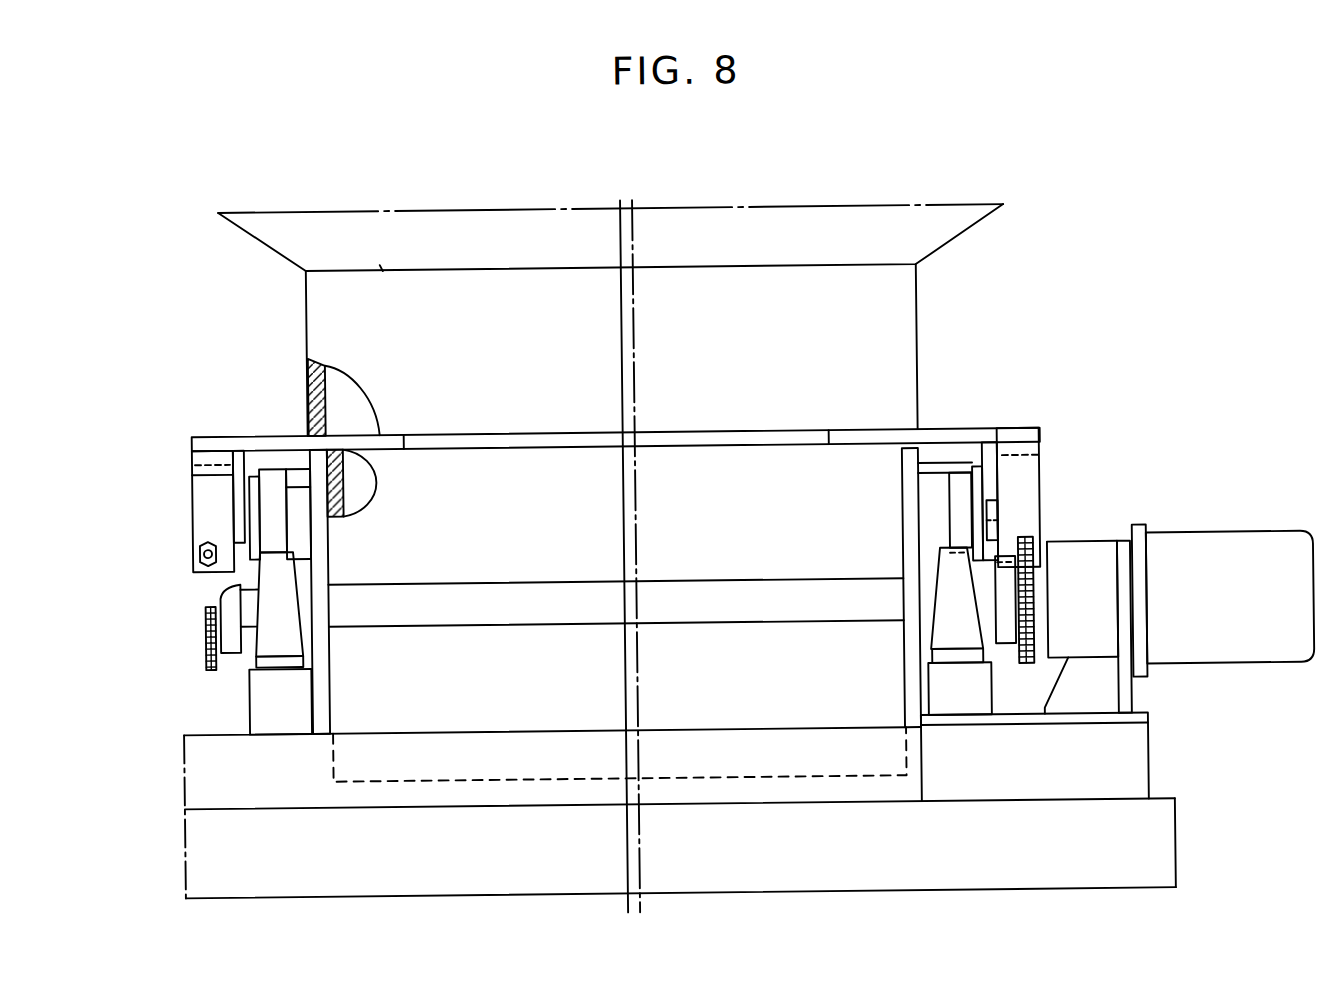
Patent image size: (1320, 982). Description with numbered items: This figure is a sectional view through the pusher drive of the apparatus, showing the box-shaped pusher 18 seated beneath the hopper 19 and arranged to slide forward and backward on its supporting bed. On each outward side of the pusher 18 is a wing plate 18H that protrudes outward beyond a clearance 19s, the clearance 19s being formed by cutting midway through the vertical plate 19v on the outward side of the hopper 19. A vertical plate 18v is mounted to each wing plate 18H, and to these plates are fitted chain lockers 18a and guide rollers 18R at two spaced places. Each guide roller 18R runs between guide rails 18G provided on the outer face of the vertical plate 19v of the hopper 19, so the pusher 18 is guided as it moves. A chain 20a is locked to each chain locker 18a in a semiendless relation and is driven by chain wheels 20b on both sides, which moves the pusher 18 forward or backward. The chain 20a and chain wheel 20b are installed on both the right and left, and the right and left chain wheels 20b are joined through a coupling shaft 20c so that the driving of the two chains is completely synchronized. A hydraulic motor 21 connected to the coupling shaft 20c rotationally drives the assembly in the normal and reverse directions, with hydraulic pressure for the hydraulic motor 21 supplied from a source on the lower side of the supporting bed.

The pusher 18 is at (557, 523).
The wing plate 18H is at (219, 443).
The vertical plate 18v is at (193, 465).
The chain locker 18a is at (205, 518).
The guide roller 18R is at (275, 492).
The guide rail 18G is at (287, 470).
The hopper 19 is at (517, 211).
The vertical plate 19v is at (319, 371).
The clearance 19s is at (339, 428).
The chain 20a is at (208, 667).
The chain wheel 20b is at (205, 628).
The coupling shaft 20c is at (528, 616).
The hydraulic motor 21 is at (1270, 564).